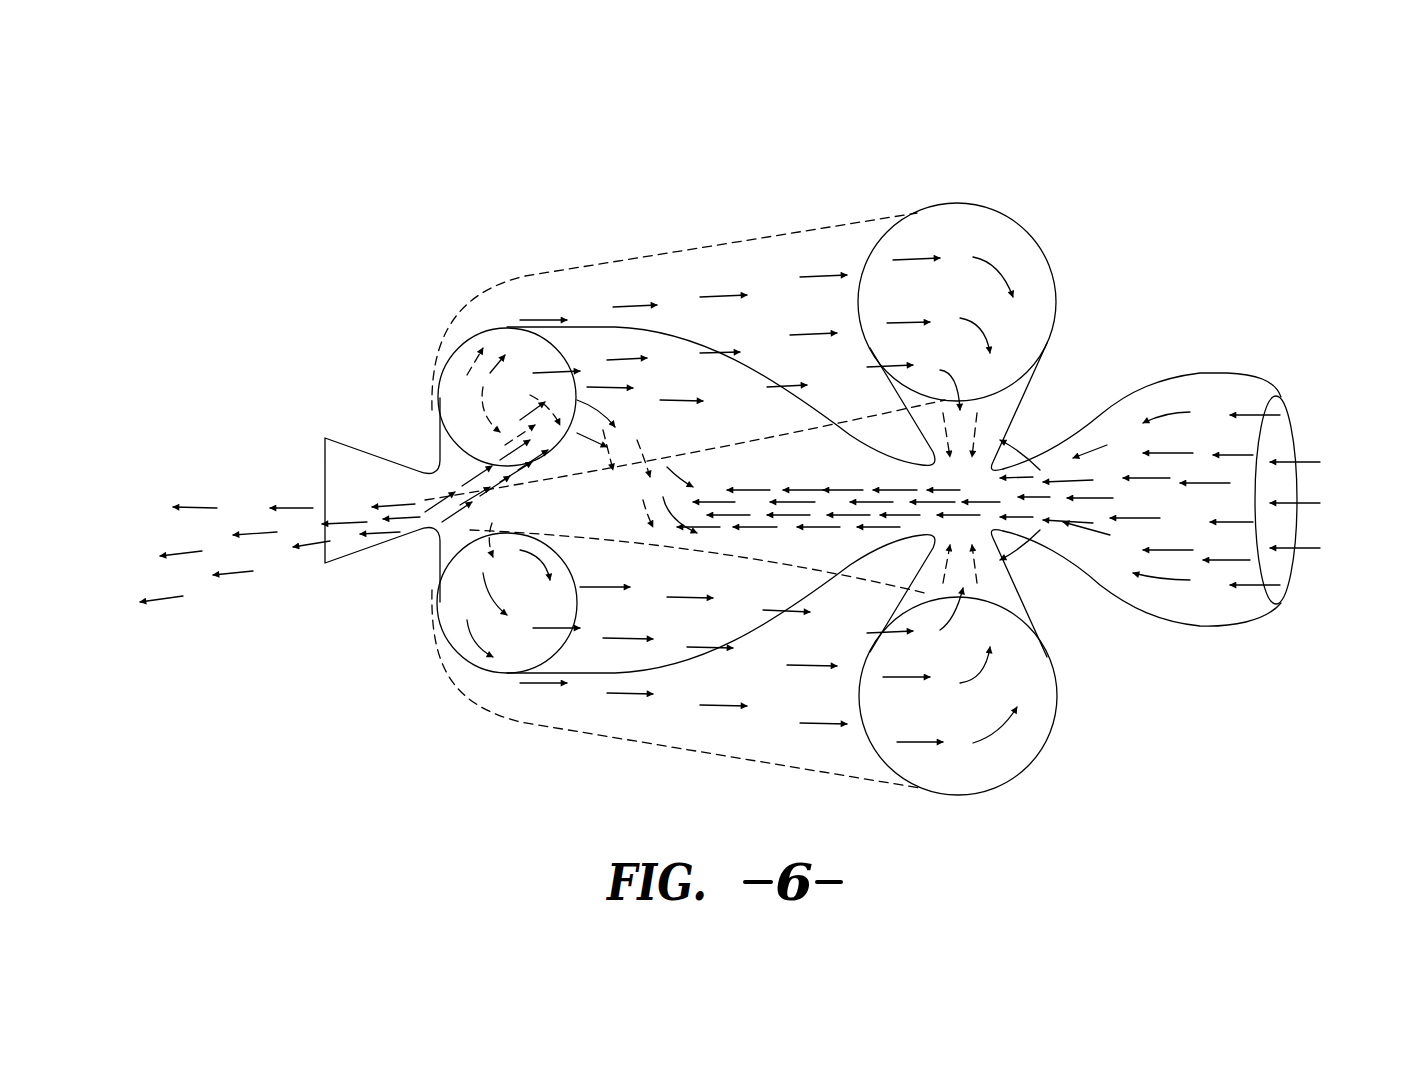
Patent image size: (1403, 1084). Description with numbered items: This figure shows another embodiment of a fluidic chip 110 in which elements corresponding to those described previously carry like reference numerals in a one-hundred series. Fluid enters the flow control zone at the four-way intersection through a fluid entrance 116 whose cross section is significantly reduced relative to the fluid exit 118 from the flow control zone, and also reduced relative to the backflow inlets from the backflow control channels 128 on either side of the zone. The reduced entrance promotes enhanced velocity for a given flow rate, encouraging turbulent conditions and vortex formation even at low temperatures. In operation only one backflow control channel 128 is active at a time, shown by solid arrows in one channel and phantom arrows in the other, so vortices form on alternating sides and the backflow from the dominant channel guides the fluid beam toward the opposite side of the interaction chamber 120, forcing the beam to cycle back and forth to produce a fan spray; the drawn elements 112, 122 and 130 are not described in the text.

The fluidic chip 110 is at (752, 464).
The inlet 112 is at (1297, 438).
The fluid entrance 116 is at (1003, 446).
The fluid exit 118 is at (973, 553).
The interaction chamber 120 is at (592, 323).
The nozzle 122 is at (322, 468).
The backflow control channel 128 is at (690, 240).
The vortex chamber 130 is at (983, 204).